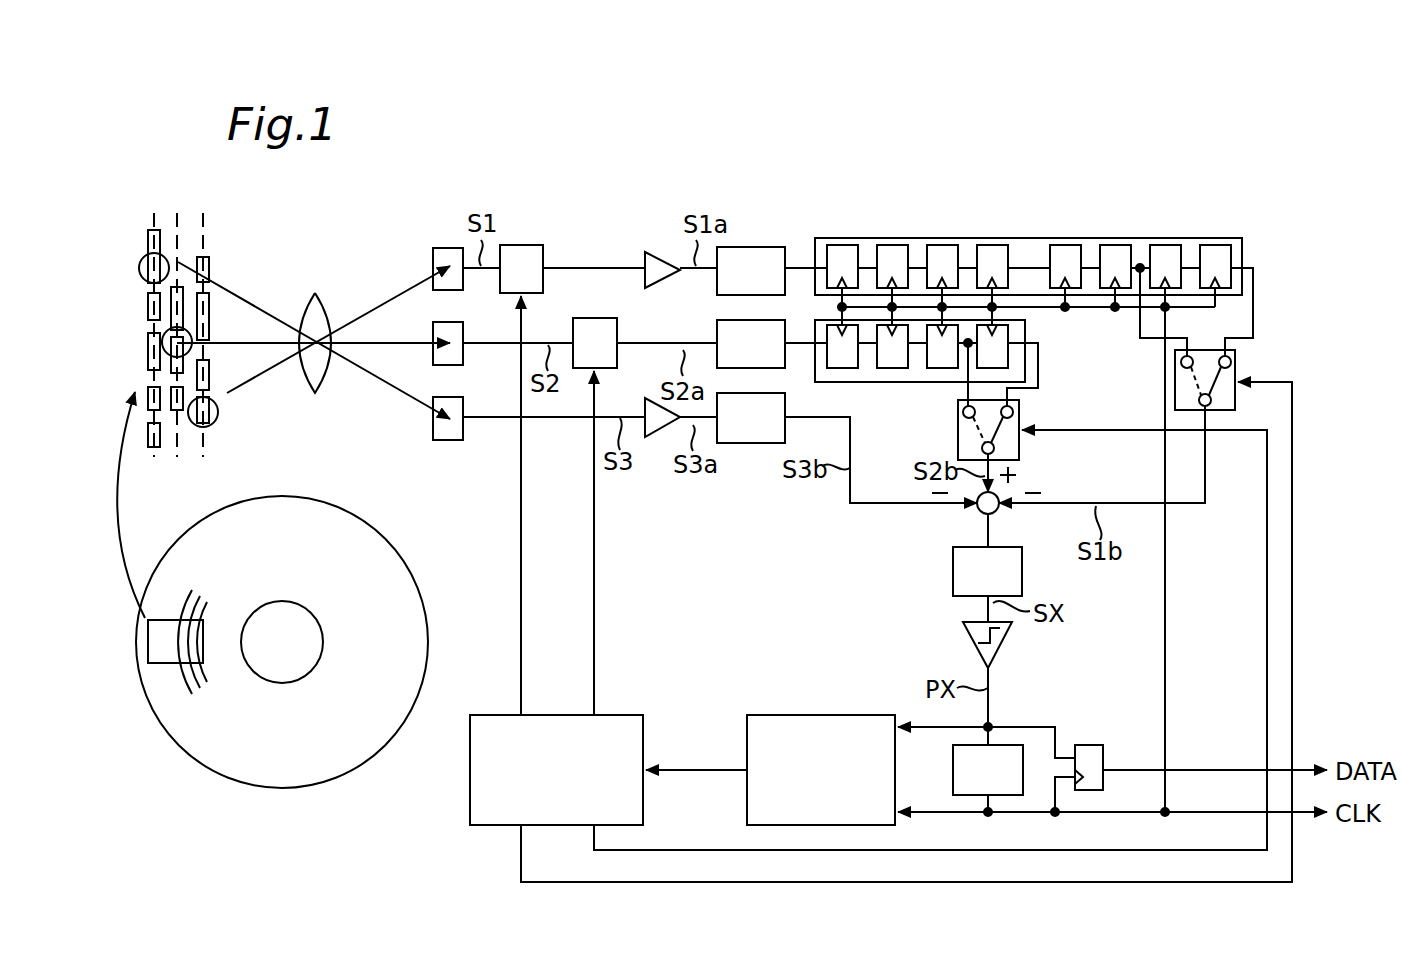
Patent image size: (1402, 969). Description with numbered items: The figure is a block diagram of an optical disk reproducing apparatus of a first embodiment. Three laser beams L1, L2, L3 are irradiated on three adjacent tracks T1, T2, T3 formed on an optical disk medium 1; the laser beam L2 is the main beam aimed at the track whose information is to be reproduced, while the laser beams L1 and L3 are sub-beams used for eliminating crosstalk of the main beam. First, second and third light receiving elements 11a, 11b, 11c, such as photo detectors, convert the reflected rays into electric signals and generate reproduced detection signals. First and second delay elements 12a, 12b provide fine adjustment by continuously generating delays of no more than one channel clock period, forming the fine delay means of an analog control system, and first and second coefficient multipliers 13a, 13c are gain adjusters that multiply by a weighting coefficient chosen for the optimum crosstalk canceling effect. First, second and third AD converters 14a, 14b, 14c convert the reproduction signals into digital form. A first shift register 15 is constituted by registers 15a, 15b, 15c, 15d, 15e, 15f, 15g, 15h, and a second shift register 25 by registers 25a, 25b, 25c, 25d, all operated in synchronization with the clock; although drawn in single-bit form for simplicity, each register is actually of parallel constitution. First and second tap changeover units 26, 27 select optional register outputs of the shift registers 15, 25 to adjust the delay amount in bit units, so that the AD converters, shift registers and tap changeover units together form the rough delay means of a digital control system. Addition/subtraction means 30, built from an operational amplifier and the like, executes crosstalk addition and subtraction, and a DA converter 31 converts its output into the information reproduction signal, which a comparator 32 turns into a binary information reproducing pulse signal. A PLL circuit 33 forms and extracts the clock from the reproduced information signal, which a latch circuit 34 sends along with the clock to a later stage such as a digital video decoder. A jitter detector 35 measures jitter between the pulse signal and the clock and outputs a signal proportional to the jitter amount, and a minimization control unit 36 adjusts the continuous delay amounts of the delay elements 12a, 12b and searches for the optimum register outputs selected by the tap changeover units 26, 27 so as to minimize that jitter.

The optical disk medium 1 is at (284, 788).
The first light receiving element 11a is at (437, 248).
The second light receiving element 11b is at (463, 355).
The third light receiving element 11c is at (449, 440).
The first delay element 12a is at (521, 245).
The second delay element 12b is at (594, 318).
The first coefficient multiplier 13a is at (657, 252).
The second coefficient multiplier 13c is at (655, 437).
The first AD converter 14a is at (750, 247).
The second AD converter 14b is at (717, 330).
The third AD converter 14c is at (745, 443).
The first shift register 15 is at (1060, 240).
The register 15a is at (842, 245).
The register 15b is at (892, 245).
The register 15c is at (942, 245).
The register 15d is at (992, 245).
The register 15e is at (1065, 245).
The register 15f is at (1115, 245).
The register 15g is at (1165, 245).
The register 15h is at (1215, 245).
The second shift register 25 is at (947, 364).
The register 25a is at (832, 368).
The register 25b is at (880, 368).
The register 25c is at (930, 368).
The register 25d is at (1008, 333).
The first tap changeover unit 26 is at (1238, 362).
The second tap changeover unit 27 is at (1020, 418).
The addition/subtraction means 30 is at (977, 512).
The DA converter 31 is at (953, 570).
The comparator 32 is at (1000, 650).
The PLL circuit 33 is at (953, 759).
The latch circuit 34 is at (1089, 745).
The jitter detector 35 is at (816, 715).
The minimization control unit 36 is at (613, 715).
The laser beam L1 is at (218, 412).
The laser beam L2 is at (162, 341).
The laser beam L3 is at (139, 268).
The track T1 is at (207, 353).
The track T2 is at (177, 364).
The track T3 is at (146, 353).